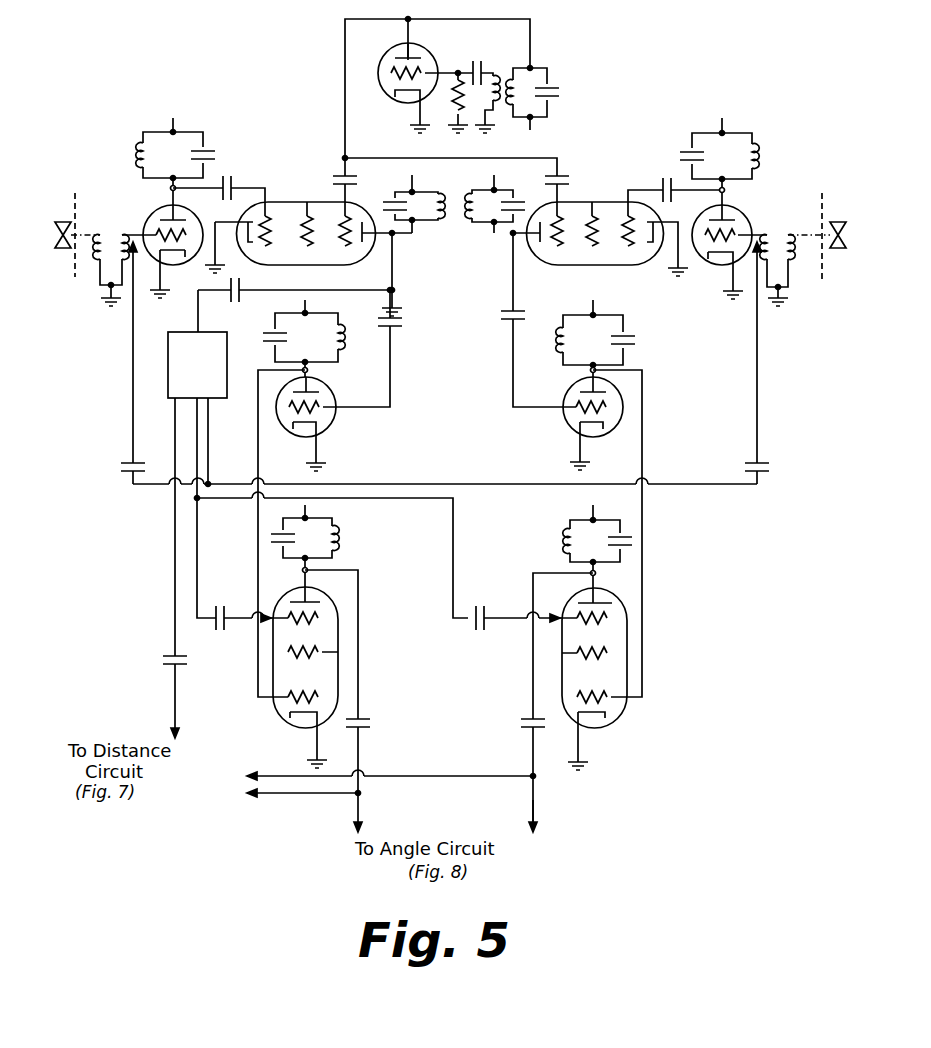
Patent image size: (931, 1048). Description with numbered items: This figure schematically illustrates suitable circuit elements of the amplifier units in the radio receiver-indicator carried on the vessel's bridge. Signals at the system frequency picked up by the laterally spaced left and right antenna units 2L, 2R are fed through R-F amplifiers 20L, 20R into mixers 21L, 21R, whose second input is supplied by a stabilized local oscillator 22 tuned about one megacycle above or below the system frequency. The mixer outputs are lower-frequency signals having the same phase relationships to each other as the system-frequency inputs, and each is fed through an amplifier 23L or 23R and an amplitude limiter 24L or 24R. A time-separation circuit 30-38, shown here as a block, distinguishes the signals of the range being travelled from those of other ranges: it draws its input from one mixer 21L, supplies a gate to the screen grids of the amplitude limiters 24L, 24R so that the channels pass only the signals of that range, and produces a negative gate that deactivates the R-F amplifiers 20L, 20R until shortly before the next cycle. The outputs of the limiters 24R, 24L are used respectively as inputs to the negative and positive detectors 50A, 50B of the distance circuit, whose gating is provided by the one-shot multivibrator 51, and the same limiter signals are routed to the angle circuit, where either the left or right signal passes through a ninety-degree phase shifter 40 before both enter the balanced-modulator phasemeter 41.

The stabilized local oscillator 22 is at (584, 41).
The left antenna unit 2L is at (73, 235).
The right antenna unit 2R is at (818, 236).
The left R-F amplifier 20L is at (141, 215).
The right R-F amplifier 20R is at (798, 218).
The left mixer 21L is at (312, 194).
The right mixer 21R is at (614, 191).
The left amplifier 23L is at (437, 401).
The right amplifier 23R is at (504, 400).
The left amplitude limiter 24L is at (387, 559).
The right amplitude limiter 24R is at (545, 568).
The time-separation circuit 30-38 is at (168, 345).
The negative detector 50A is at (363, 776).
The positive detector 50B is at (275, 794).
The one-shot multivibrator 51 is at (172, 716).
The balanced-modulator phasemeter 41 is at (358, 815).
The 90° phase shifter 40 is at (533, 812).